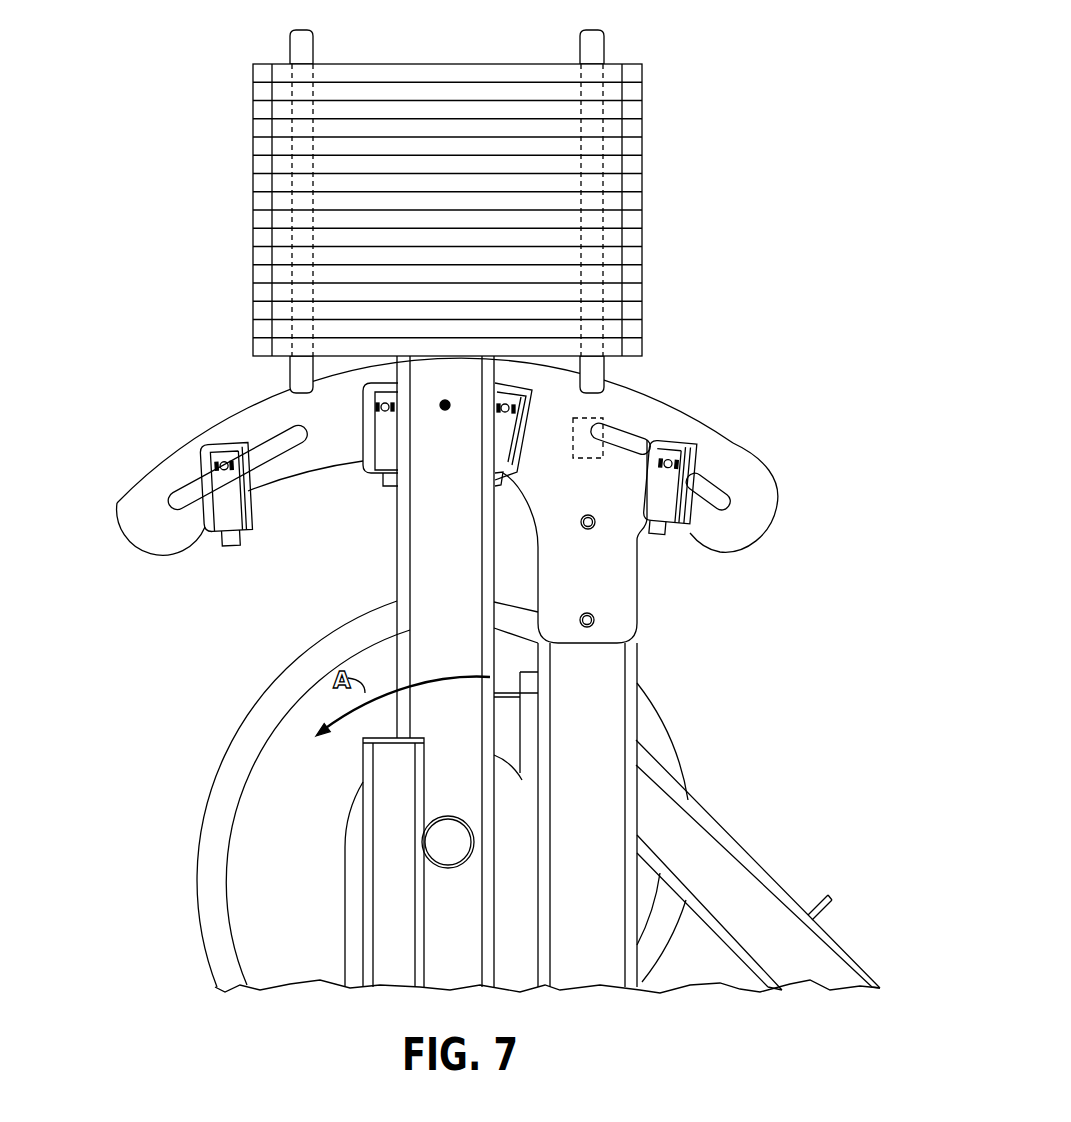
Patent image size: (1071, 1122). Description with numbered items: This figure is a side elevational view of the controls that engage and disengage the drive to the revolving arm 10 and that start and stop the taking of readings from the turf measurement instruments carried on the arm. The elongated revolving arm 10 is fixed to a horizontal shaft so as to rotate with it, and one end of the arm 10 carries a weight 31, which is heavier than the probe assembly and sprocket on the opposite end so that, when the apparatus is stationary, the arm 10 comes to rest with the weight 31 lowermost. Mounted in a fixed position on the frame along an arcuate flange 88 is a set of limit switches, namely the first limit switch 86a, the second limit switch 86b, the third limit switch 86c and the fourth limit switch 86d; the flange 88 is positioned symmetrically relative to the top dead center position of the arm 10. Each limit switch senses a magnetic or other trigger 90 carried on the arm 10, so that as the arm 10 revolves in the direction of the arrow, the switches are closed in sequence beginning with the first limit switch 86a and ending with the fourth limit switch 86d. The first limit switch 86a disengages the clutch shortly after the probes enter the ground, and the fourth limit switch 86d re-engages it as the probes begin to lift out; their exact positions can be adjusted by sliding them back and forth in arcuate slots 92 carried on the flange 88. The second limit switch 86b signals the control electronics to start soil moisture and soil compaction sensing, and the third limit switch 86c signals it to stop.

The revolving arm 10 is at (433, 615).
The weight 31 is at (527, 145).
The first limit switch 86a is at (697, 448).
The second limit switch 86b is at (532, 398).
The third limit switch 86c is at (368, 392).
The fourth limit switch 86d is at (212, 508).
The arcuate flange 88 is at (317, 460).
The trigger 90 is at (445, 405).
The arcuate slots 92 is at (180, 482).